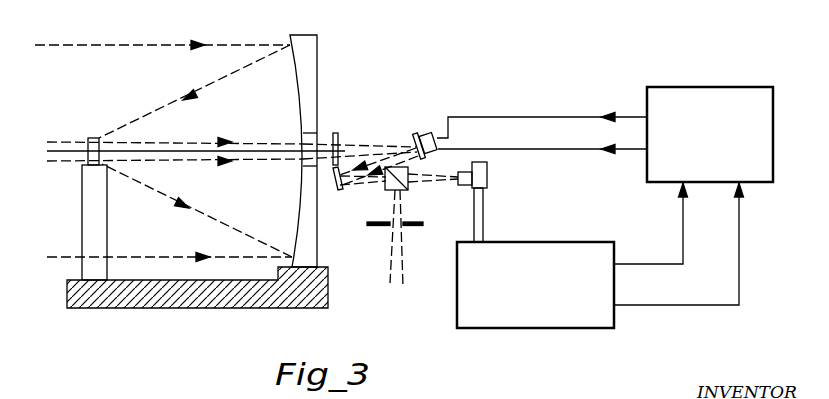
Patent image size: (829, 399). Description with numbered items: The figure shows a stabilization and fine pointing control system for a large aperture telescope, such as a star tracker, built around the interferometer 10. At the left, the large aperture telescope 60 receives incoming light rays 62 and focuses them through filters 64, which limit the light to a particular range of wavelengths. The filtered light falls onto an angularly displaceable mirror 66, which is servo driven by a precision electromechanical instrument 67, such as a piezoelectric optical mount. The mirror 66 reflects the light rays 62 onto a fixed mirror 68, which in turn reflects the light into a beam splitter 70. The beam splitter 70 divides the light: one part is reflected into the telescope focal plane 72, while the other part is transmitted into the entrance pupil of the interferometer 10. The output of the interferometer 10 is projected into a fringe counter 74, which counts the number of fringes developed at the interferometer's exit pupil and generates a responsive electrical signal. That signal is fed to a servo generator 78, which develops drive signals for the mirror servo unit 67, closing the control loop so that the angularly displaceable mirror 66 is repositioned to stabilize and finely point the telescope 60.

The interferometer 10 is at (487, 170).
The large aperture telescope 60 is at (158, 234).
The incoming light rays 62 is at (172, 47).
The filters 64 is at (337, 131).
The angularly displaceable mirror 66 is at (415, 133).
The precision electromechanical instrument 67 is at (430, 136).
The fixed mirror 68 is at (336, 190).
The beam splitter 70 is at (409, 188).
The telescope focal plane 72 is at (380, 228).
The fringe counter 74 is at (576, 242).
The servo generator 78 is at (743, 87).